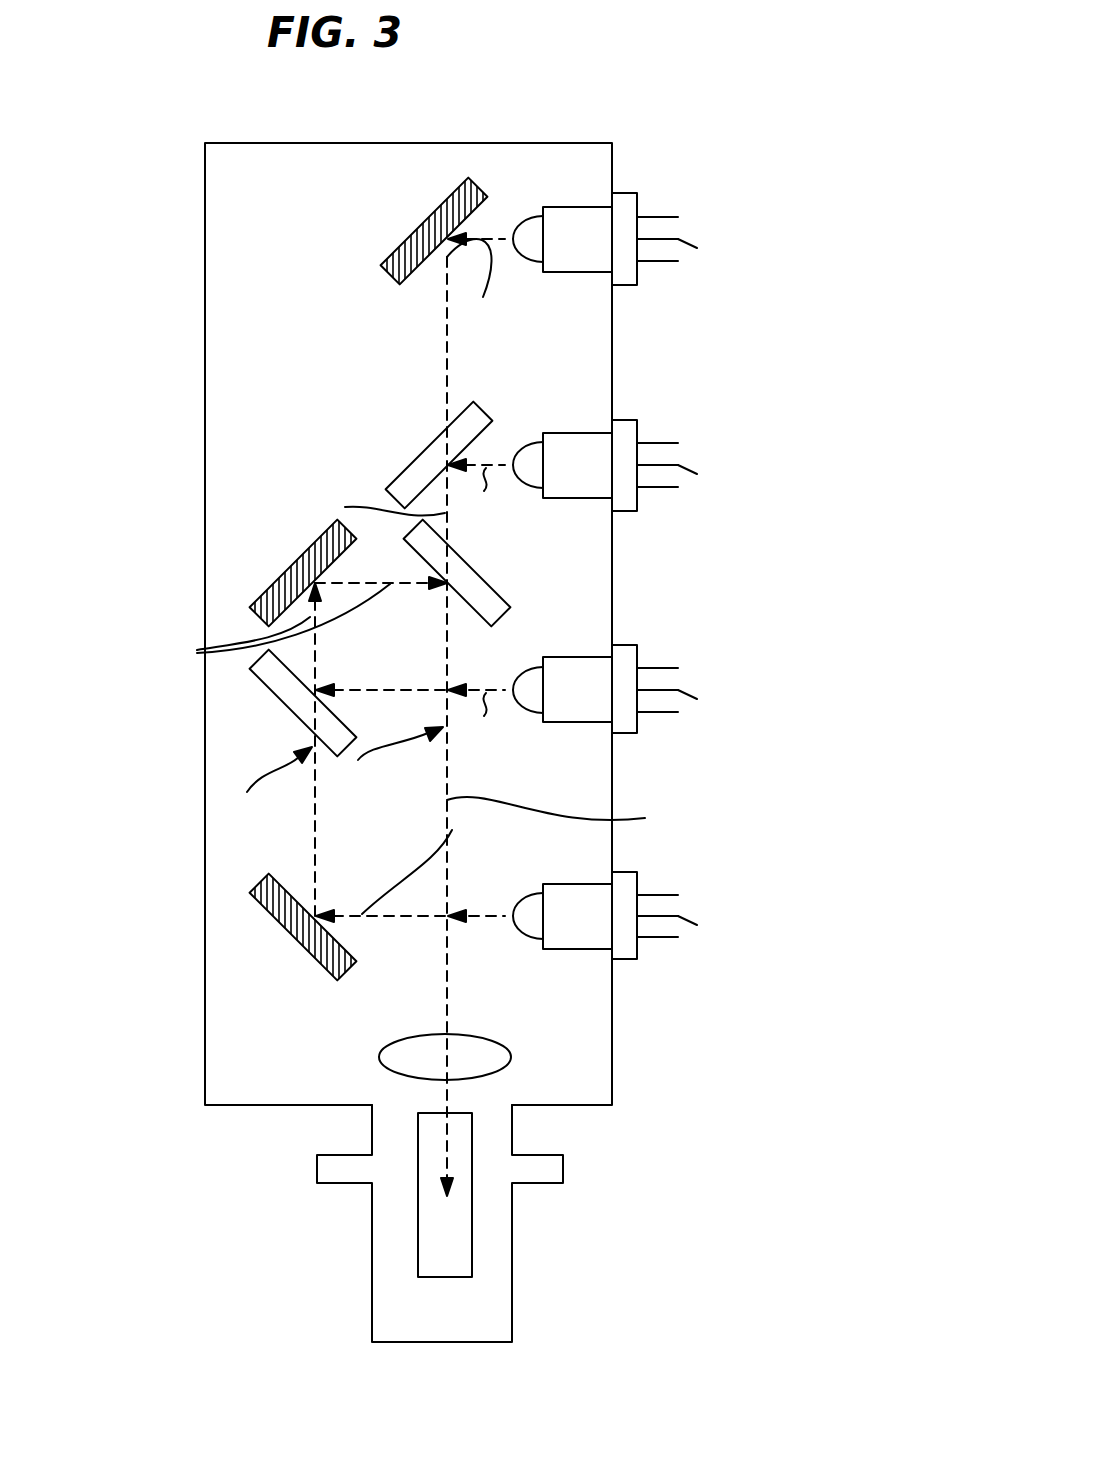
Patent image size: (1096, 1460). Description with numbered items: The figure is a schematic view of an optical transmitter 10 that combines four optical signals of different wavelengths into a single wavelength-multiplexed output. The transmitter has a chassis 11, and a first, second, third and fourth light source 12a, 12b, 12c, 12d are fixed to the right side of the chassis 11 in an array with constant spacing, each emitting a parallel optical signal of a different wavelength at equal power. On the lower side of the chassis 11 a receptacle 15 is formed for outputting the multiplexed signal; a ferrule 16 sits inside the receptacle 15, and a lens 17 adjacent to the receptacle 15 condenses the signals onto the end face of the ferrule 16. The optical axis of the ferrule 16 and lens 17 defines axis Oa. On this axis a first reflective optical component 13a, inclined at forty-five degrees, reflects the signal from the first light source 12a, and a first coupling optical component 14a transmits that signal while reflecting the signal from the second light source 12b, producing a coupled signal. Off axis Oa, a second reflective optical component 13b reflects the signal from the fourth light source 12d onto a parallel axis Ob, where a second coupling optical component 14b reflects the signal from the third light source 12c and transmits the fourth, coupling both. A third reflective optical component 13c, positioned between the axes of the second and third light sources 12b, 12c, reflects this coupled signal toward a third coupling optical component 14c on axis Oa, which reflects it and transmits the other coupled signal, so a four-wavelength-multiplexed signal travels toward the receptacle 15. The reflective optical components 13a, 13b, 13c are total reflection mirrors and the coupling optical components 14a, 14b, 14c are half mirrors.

The optical transmitter 10 is at (688, 144).
The chassis 11 is at (232, 197).
The first light source 12a is at (637, 273).
The second light source 12b is at (637, 495).
The third light source 12c is at (637, 723).
The fourth light source 12d is at (637, 950).
The first reflective optical component 13a is at (485, 183).
The second reflective optical component 13b is at (295, 942).
The third reflective optical component 13c is at (270, 582).
The first coupling optical component 14a is at (430, 450).
The second coupling optical component 14b is at (285, 688).
The third coupling optical component 14c is at (500, 592).
The receptacle 15 is at (352, 1270).
The ferrule 16 is at (452, 1232).
The lens 17 is at (490, 1062).